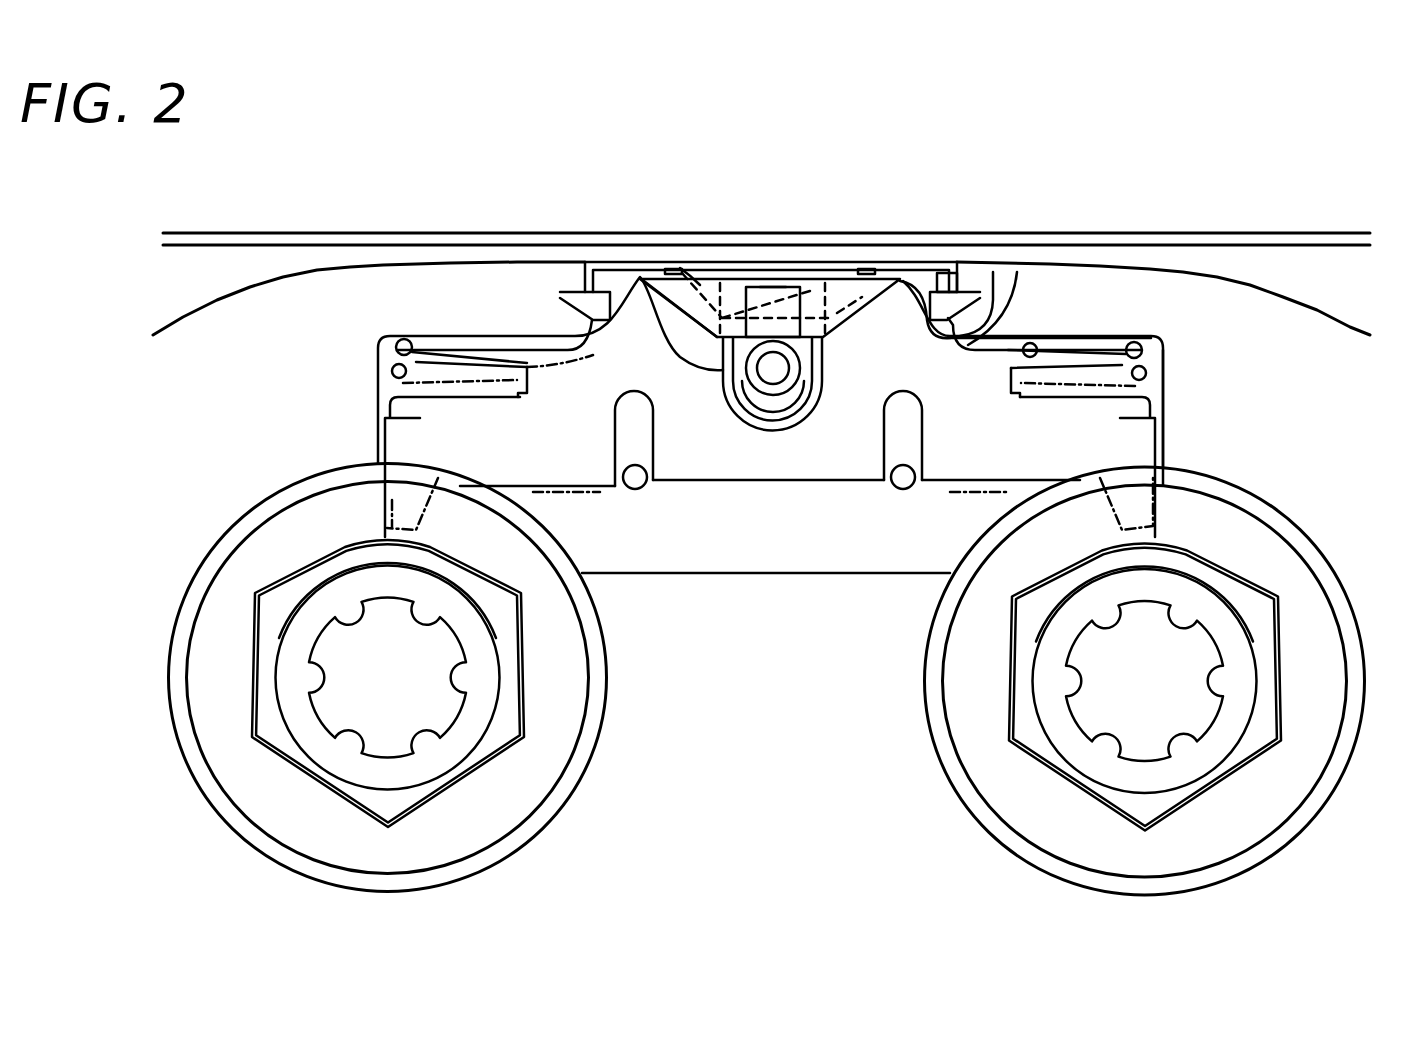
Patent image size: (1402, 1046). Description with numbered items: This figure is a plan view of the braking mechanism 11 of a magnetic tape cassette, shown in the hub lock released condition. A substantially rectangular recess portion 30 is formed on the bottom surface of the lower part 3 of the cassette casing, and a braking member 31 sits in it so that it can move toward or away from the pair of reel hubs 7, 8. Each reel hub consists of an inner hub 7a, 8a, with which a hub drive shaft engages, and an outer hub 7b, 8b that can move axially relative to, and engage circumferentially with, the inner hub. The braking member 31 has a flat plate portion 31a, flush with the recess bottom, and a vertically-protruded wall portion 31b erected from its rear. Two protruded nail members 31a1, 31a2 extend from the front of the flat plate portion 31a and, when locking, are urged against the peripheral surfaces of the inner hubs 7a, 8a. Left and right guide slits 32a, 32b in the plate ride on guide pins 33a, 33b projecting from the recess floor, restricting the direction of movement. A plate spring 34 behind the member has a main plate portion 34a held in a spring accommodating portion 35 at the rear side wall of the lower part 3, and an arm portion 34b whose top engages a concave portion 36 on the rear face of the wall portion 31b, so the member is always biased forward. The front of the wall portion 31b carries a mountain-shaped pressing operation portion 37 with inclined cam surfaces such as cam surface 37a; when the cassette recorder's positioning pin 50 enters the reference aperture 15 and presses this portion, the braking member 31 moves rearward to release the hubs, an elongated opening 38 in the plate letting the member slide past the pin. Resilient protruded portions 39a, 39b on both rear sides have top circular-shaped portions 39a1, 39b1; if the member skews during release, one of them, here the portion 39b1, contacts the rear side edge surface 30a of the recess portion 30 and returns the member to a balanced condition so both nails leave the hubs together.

The lower part 3 is at (566, 240).
The reel hub 7 is at (267, 861).
The inner hub 7a is at (291, 702).
The outer hub 7b is at (243, 798).
The reel hub 8 is at (995, 848).
The inner hub 8a is at (1045, 692).
The outer hub 8b is at (1000, 780).
The braking mechanism 11 is at (742, 907).
The reference aperture 15 is at (773, 378).
The recess portion 30 is at (1163, 372).
The rear side edge surface 30a is at (1040, 345).
The braking member 31 is at (703, 483).
The flat plate portion 31a is at (545, 385).
The protruded nail member 31a1 is at (392, 500).
The protruded nail member 31a2 is at (1170, 520).
The vertically-protruded wall portion 31b is at (1022, 330).
The guide slit 32a is at (647, 488).
The guide slit 32b is at (890, 470).
The guide pin 33a is at (634, 490).
The guide pin 33b is at (897, 487).
The plate spring 34 is at (830, 262).
The main plate portion 34a is at (862, 300).
The arm portion 34b is at (805, 297).
The spring accommodating portion 35 is at (945, 272).
The concave portion 36 is at (690, 268).
The pressing operation portion 37 is at (768, 327).
The inclined cam surface 37a is at (773, 287).
The opening 38 is at (640, 277).
The protruded portion 39a is at (455, 340).
The top circular-shaped portion 39a1 is at (403, 343).
The protruded portion 39b is at (1100, 345).
The top circular-shaped portion 39b1 is at (1140, 345).
The positioning pin 50 is at (773, 405).